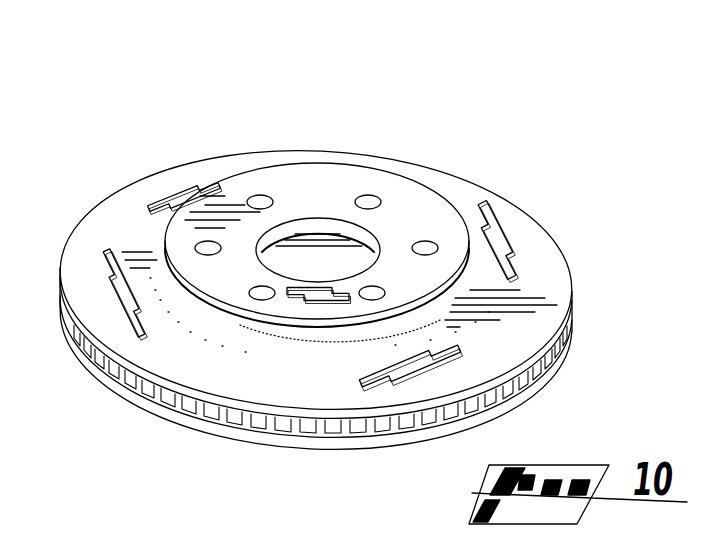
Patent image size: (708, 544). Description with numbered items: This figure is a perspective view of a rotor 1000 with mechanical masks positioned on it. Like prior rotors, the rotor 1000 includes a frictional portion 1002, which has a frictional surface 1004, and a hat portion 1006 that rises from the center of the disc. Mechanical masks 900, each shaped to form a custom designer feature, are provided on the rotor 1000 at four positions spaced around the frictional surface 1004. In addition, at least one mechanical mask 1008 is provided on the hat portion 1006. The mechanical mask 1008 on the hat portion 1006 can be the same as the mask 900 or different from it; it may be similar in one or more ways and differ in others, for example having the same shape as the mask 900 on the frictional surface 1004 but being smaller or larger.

The rotor 1000 is at (345, 268).
The frictional portion 1002 is at (245, 155).
The frictional surface 1004 is at (114, 205).
The hat portion 1006 is at (394, 175).
The mechanical mask 1008 is at (297, 303).
The mechanical mask 900 is at (506, 232).